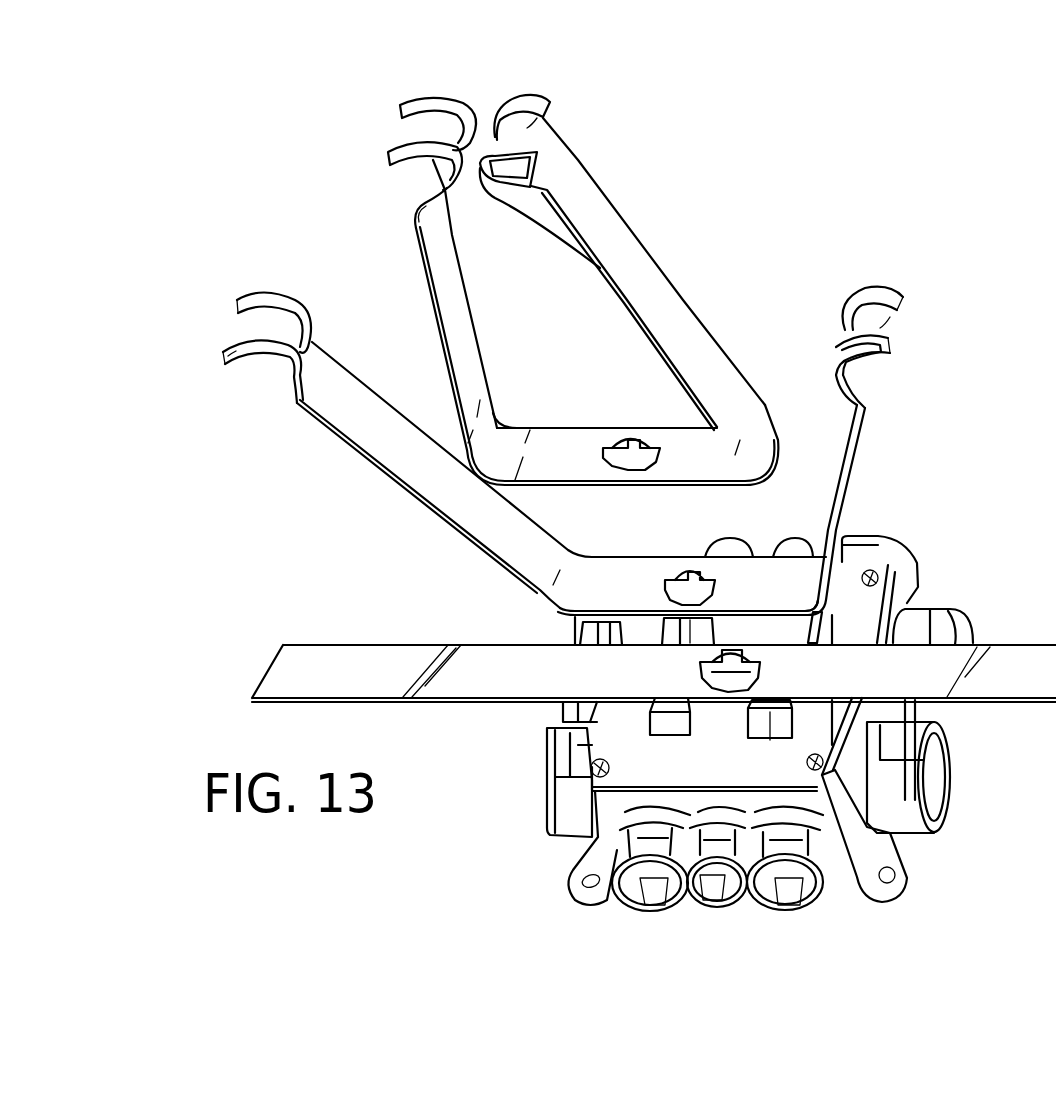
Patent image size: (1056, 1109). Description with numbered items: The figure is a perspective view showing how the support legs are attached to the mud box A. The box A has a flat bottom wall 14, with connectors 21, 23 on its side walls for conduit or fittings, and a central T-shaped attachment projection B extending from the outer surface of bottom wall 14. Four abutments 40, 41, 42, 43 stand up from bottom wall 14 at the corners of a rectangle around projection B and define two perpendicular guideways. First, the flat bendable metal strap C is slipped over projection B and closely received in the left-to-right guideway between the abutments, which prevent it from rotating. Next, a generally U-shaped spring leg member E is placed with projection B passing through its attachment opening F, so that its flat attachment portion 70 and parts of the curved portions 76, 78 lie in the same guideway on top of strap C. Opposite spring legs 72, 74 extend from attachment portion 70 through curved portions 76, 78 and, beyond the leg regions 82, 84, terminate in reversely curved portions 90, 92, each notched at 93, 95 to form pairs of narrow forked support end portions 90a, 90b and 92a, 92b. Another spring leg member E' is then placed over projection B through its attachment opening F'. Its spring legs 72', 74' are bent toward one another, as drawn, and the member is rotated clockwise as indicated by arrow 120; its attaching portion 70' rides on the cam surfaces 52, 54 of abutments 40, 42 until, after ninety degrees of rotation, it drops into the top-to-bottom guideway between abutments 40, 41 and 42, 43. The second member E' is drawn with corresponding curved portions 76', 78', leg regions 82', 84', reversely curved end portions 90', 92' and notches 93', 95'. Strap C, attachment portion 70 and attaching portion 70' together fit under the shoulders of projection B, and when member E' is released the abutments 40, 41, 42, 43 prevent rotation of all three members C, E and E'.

The arrow 120 is at (647, 197).
The spring leg member E' is at (590, 284).
The spring leg member E is at (633, 479).
The spring leg 72' is at (432, 294).
The spring leg 74' is at (653, 306).
The attaching portion 70' is at (622, 426).
The rounded end 76' is at (506, 423).
The rounded end 78' is at (717, 481).
The bend 82' is at (393, 202).
The bend 84' is at (540, 218).
The hook 90' is at (376, 120).
The hook 92' is at (461, 124).
The hook tab 93' is at (395, 159).
The gap 95' is at (568, 132).
The attachment opening F' is at (631, 406).
The spring leg 72 is at (446, 475).
The spring leg 74 is at (866, 508).
The attachment portion 70 is at (692, 562).
The curved portion 76 is at (522, 600).
The curved portion 78 is at (811, 555).
The bend 82 is at (272, 422).
The bend 84 is at (889, 403).
The reversely curved spring leg portion 90 is at (243, 288).
The reversely curved support end portion 90a is at (262, 362).
The reversely curved support end portion 90b is at (288, 294).
The notch 93 is at (199, 341).
The reversely curved spring leg portion 92 is at (884, 276).
The reversely curved support end portion 92a is at (890, 343).
The reversely curved support end portion 92b is at (895, 296).
The notch 95 is at (921, 336).
The attachment opening F is at (717, 552).
The strap C is at (284, 638).
The mud box A is at (925, 592).
The attachment projection B is at (733, 700).
The abutment 40 is at (662, 625).
The abutment 41 is at (815, 620).
The cam surface 54 is at (682, 638).
The cam surface 52 is at (776, 710).
The bottom wall 14 is at (600, 728).
The connector 21 is at (553, 818).
The connector 23 is at (952, 752).
The abutment 42 is at (762, 718).
The abutment 43 is at (665, 715).